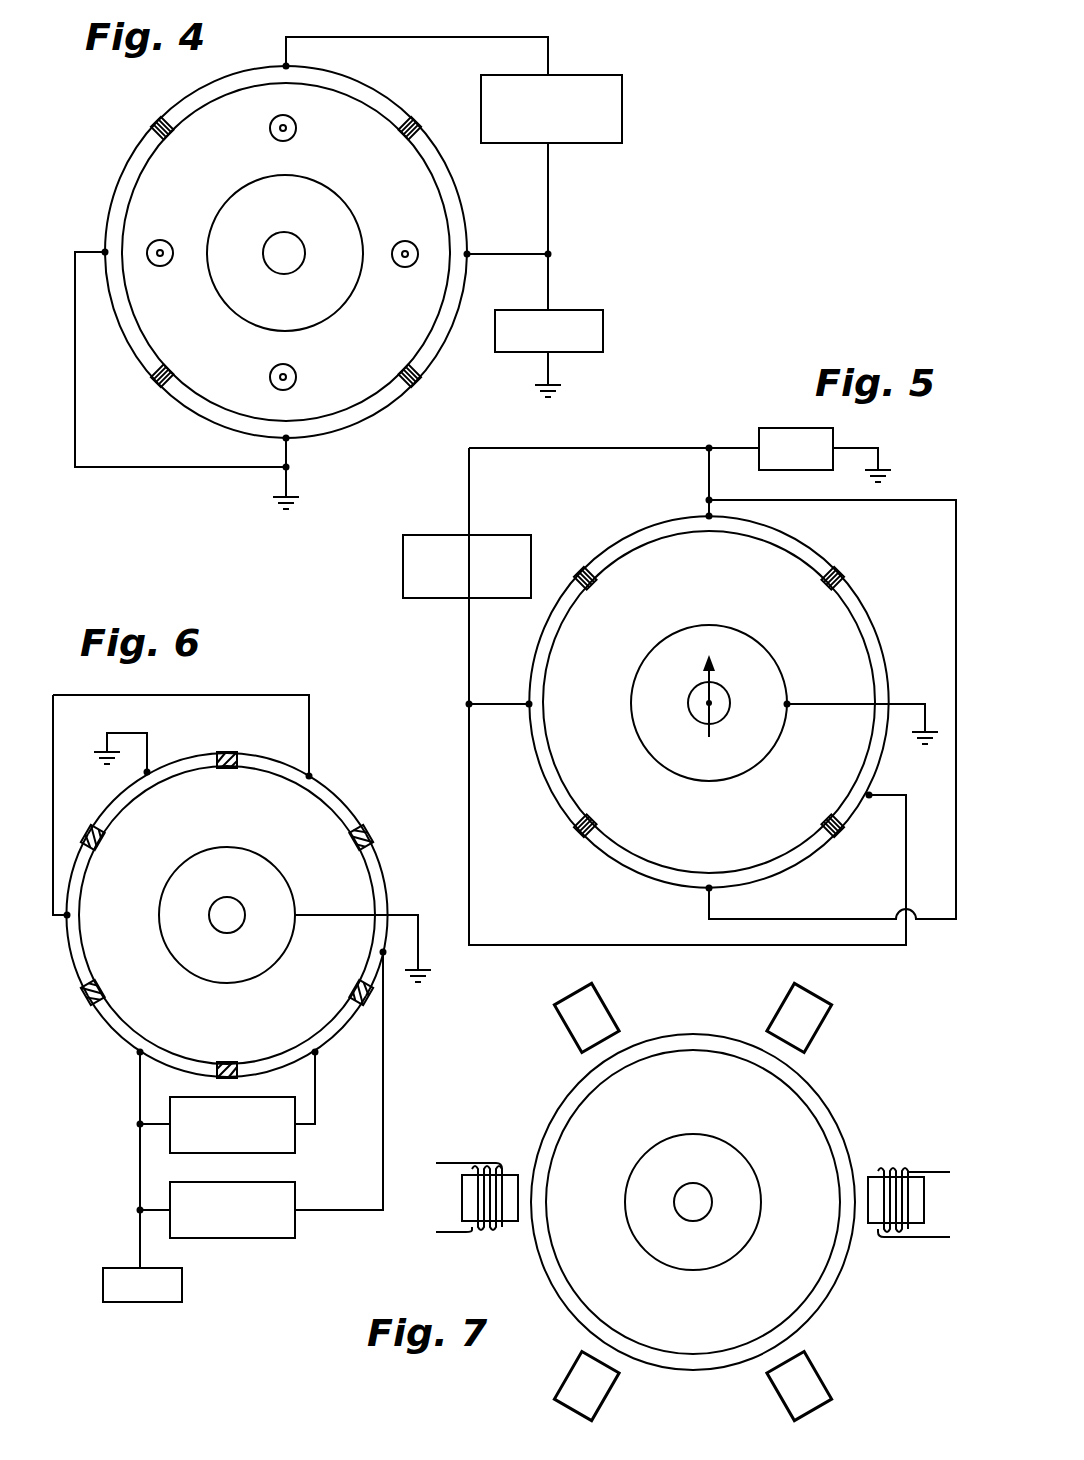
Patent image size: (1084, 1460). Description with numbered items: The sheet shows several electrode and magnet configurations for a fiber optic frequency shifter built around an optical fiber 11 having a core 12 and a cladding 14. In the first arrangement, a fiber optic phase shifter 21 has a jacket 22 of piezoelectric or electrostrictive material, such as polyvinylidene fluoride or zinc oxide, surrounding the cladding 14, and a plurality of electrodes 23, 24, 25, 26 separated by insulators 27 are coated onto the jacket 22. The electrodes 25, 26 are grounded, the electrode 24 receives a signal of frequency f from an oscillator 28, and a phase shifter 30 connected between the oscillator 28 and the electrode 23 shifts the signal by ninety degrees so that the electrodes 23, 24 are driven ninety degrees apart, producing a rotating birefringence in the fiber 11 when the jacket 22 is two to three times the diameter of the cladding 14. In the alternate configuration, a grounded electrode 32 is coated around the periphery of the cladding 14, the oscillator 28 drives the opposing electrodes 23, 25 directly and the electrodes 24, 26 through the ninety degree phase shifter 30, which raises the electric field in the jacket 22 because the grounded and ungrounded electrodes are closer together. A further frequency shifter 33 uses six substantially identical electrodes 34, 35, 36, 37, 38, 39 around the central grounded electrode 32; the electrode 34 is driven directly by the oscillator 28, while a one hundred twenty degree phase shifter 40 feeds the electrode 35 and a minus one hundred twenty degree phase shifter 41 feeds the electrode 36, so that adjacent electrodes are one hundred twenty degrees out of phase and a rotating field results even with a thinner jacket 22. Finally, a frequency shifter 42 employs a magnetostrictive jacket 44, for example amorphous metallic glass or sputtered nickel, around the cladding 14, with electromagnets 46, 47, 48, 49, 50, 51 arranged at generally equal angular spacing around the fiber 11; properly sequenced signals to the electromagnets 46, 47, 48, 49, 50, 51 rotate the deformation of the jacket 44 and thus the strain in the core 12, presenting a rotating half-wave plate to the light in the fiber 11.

In FIG. 5, the optical fiber 11 is at (688, 618).
In FIG. 6, the optical fiber 11 is at (193, 848).
In FIG. 7, the optical fiber 11 is at (688, 1112).
In FIG. 4, the core 12 is at (272, 272).
In FIG. 5, the core 12 is at (702, 723).
In FIG. 6, the core 12 is at (230, 933).
In FIG. 4, the cladding 14 is at (345, 300).
In FIG. 5, the cladding 14 is at (760, 763).
In FIG. 6, the cladding 14 is at (276, 866).
In FIG. 7, the cladding 14 is at (754, 1167).
In FIG. 4, the fiber optic phase shifter 21 is at (592, 219).
In FIG. 4, the jacket 22 is at (456, 193).
In FIG. 4, the electrode 23 is at (357, 82).
In FIG. 5, the electrode 23 is at (797, 538).
In FIG. 4, the electrode 24 is at (469, 228).
In FIG. 5, the electrode 24 is at (883, 652).
In FIG. 4, the electrode 25 is at (340, 431).
In FIG. 5, the electrode 25 is at (780, 873).
In FIG. 4, the electrode 26 is at (112, 180).
In FIG. 5, the electrode 26 is at (549, 790).
In FIG. 4, the insulator 27 is at (157, 120).
In FIG. 5, the insulator 27 is at (582, 569).
In FIG. 4, the oscillator 28 is at (604, 331).
In FIG. 5, the oscillator 28 is at (762, 428).
In FIG. 6, the oscillator 28 is at (150, 1302).
In FIG. 4, the phase shifter 30 is at (622, 108).
In FIG. 5, the phase shifter 30 is at (420, 600).
In FIG. 5, the electrode 32 is at (786, 662).
In FIG. 6, the frequency shifter 33 is at (280, 684).
In FIG. 6, the electrode 34 is at (122, 1040).
In FIG. 6, the electrode 35 is at (323, 1045).
In FIG. 6, the electrode 36 is at (387, 892).
In FIG. 6, the electrode 37 is at (330, 791).
In FIG. 6, the electrode 38 is at (178, 761).
In FIG. 6, the electrode 39 is at (85, 992).
In FIG. 6, the 120 degree phase shifter 40 is at (295, 1146).
In FIG. 6, the -120 degree phase shifter 41 is at (285, 1239).
In FIG. 7, the frequency shifter 42 is at (538, 1082).
In FIG. 7, the magnetostrictive jacket 44 is at (598, 1143).
In FIG. 7, the electromagnet 46 is at (890, 1172).
In FIG. 7, the electromagnet 47 is at (808, 1373).
In FIG. 7, the electromagnet 48 is at (573, 1372).
In FIG. 7, the electromagnet 49 is at (488, 1230).
In FIG. 7, the electromagnet 50 is at (607, 998).
In FIG. 7, the electromagnet 51 is at (816, 1028).